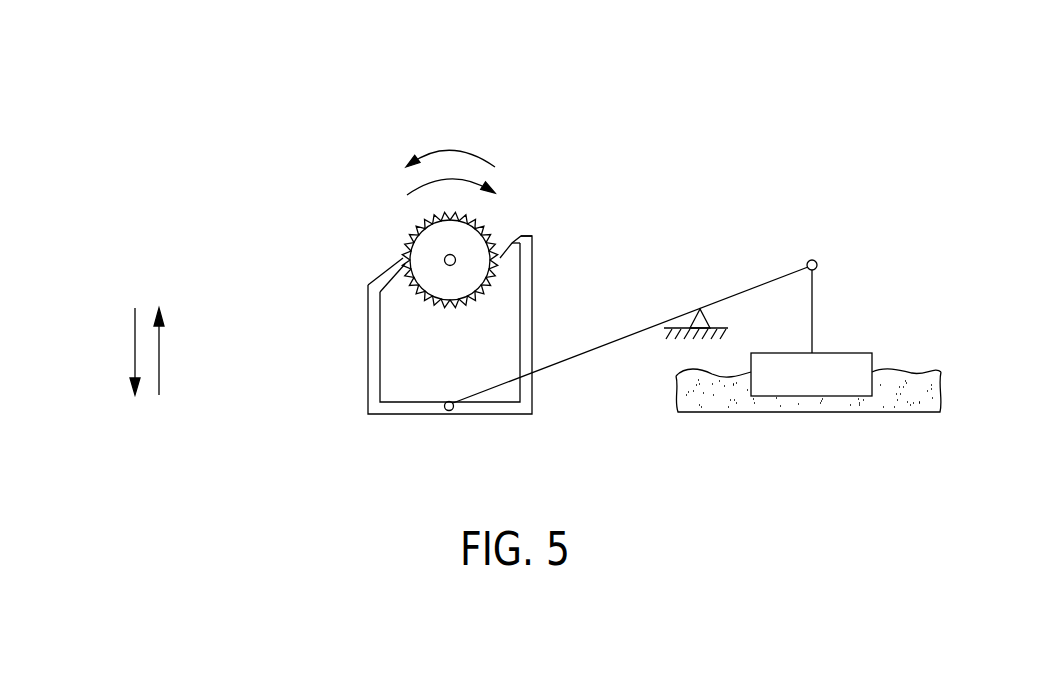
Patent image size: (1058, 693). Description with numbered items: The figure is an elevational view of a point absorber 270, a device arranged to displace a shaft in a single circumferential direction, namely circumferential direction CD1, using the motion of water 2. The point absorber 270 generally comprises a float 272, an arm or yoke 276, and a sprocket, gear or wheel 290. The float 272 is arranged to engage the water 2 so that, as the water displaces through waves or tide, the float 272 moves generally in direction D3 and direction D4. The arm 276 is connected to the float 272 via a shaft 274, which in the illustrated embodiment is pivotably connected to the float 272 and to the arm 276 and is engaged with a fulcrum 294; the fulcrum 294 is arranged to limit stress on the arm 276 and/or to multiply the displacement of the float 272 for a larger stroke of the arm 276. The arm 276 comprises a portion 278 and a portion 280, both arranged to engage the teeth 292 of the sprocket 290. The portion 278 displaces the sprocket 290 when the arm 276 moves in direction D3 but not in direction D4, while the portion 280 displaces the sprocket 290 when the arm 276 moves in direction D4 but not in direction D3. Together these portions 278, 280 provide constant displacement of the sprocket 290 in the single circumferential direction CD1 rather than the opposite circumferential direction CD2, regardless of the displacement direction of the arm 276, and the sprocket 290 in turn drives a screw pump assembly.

The point absorber 270 is at (284, 116).
The float 272 is at (817, 396).
The shaft 274 is at (778, 275).
The arm 276 is at (493, 408).
The portion 278 is at (380, 280).
The portion 280 is at (523, 238).
The sprocket 290 is at (447, 282).
The teeth 292 is at (490, 225).
The fulcrum 294 is at (703, 312).
The water 2 is at (900, 372).
The circumferential direction CD1 is at (468, 177).
The circumferential direction CD2 is at (447, 143).
The direction D3 is at (160, 367).
The direction D4 is at (135, 337).